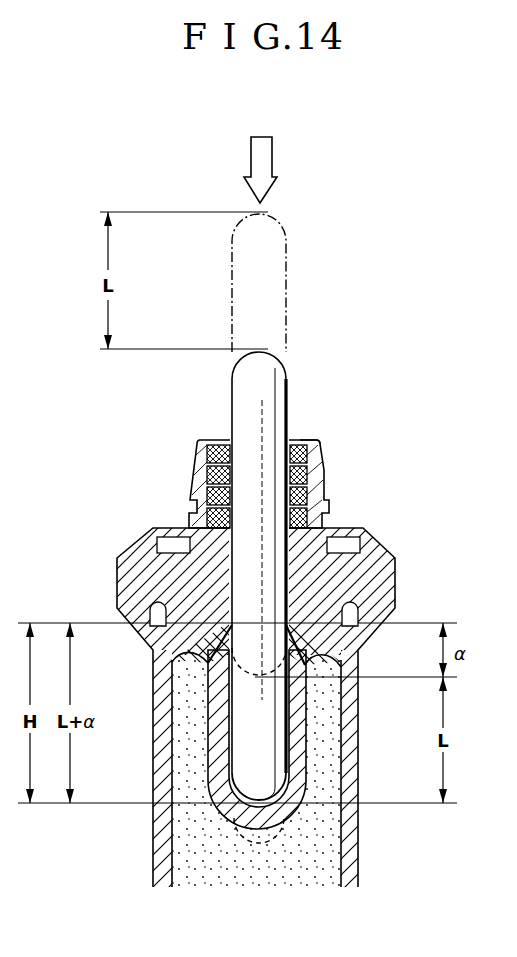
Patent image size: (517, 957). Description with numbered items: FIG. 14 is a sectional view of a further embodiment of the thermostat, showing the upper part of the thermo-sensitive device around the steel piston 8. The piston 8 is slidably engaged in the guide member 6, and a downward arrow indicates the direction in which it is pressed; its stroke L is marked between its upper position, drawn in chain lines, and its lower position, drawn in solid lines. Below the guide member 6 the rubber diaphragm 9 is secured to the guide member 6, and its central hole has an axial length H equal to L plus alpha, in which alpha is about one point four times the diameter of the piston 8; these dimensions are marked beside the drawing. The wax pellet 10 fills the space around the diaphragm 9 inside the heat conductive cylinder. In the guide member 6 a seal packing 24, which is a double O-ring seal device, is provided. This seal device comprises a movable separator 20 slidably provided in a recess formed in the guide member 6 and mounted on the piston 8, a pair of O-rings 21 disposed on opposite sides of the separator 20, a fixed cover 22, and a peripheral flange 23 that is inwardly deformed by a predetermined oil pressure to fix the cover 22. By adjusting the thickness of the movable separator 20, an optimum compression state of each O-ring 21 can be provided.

The guide member 6 is at (322, 513).
The piston 8 is at (242, 382).
The rubber diaphragm 9 is at (208, 745).
The wax pellet 10 is at (325, 752).
The movable separator 20 is at (198, 492).
The O-rings 21 is at (322, 480).
The fixed cover 22 is at (203, 447).
The peripheral flange 23 is at (308, 438).
The seal packing 24 is at (313, 442).